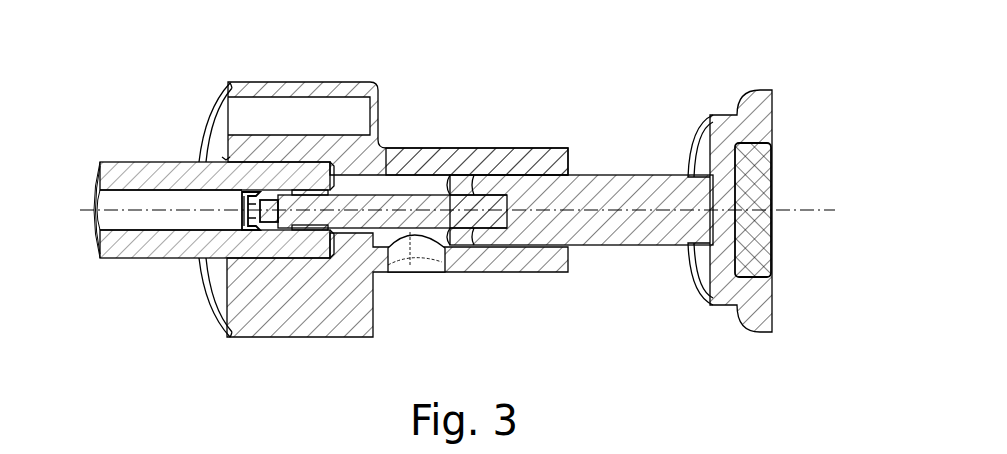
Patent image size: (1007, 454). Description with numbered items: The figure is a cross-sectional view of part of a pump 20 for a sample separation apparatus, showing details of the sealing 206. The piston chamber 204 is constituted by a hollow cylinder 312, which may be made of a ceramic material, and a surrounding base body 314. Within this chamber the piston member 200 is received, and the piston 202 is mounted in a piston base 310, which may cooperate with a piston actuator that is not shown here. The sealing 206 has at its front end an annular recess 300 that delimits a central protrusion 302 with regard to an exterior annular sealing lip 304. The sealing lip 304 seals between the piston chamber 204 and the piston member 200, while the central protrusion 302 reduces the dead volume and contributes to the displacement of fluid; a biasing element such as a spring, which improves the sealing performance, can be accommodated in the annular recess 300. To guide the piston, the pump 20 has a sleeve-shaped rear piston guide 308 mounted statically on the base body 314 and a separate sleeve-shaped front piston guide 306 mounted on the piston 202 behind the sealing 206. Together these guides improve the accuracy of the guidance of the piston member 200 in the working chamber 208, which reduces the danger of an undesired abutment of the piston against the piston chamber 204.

The pump 20 is at (790, 117).
The piston member 200 is at (503, 227).
The piston 202 is at (268, 190).
The piston chamber 204 is at (228, 150).
The sealing 206 is at (245, 177).
The working chamber 208 is at (193, 220).
The annular recess 300 is at (242, 198).
The central protrusion 302 is at (204, 262).
The exterior annular sealing lip 304 is at (240, 212).
The front piston guide 306 is at (308, 232).
The rear piston guide 308 is at (503, 247).
The piston base 310 is at (632, 223).
The hollow cylinder 312 is at (101, 246).
The base body 314 is at (427, 158).